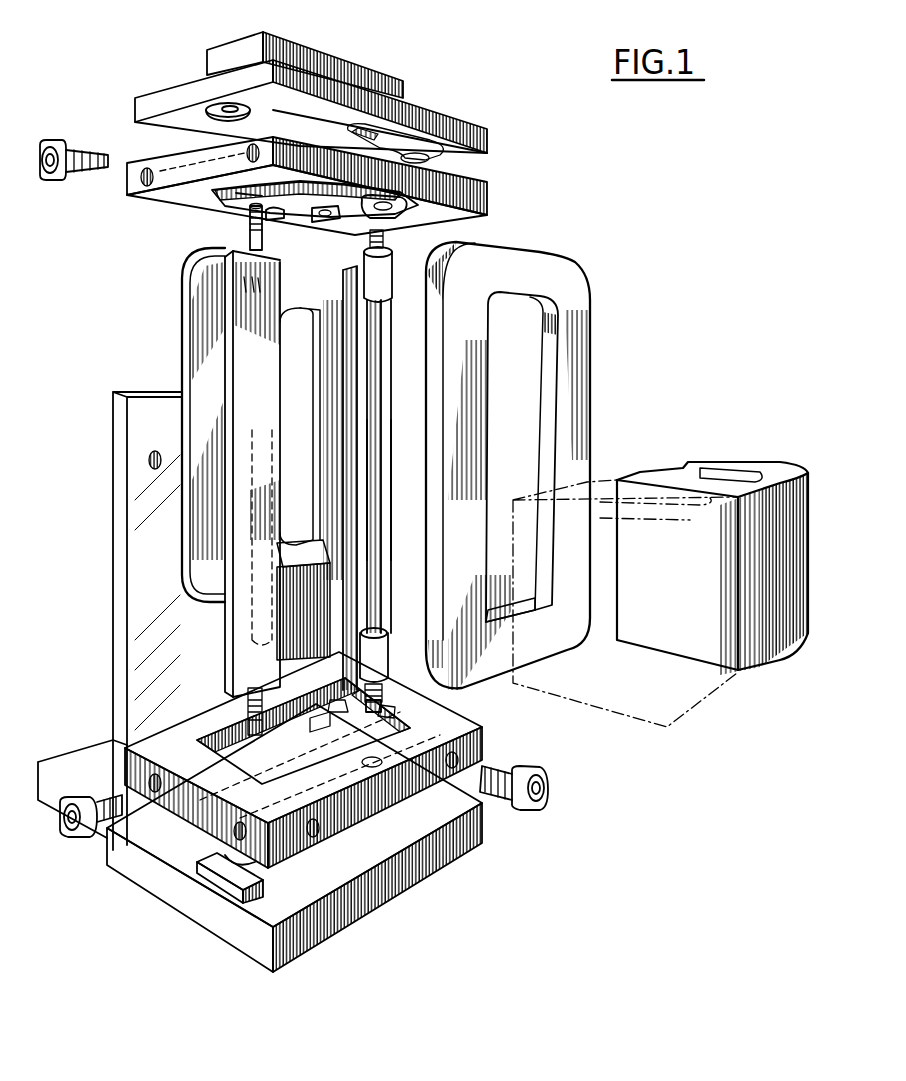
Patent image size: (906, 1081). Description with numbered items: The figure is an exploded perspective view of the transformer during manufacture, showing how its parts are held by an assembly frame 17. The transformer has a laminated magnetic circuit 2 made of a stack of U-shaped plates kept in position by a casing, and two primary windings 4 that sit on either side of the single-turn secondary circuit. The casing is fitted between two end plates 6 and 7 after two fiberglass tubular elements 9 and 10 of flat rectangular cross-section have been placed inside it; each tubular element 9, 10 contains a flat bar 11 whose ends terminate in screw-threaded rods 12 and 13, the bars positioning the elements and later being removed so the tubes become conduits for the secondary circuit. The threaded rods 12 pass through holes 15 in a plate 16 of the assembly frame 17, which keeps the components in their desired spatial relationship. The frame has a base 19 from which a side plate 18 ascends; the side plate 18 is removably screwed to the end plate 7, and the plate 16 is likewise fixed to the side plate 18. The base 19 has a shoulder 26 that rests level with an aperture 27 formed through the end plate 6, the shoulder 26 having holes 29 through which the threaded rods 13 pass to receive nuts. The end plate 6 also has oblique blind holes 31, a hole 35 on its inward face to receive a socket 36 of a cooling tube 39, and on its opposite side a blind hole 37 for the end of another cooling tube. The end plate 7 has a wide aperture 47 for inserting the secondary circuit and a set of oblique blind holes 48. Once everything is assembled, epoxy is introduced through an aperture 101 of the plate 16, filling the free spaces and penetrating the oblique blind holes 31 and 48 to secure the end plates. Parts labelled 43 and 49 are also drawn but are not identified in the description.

The laminated magnetic circuit 2 is at (773, 640).
The primary windings 4 is at (205, 350).
The end plate 6 is at (303, 760).
The end plate 7 is at (455, 216).
The tubular element 9 is at (263, 398).
The tubular element 10 is at (388, 374).
The flat bar 11 is at (380, 274).
The screw-threaded rod 12 is at (245, 222).
The screw-threaded rod 13 is at (363, 680).
The holes 15 is at (222, 108).
The plate 16 is at (339, 104).
The assembly frame 17 is at (110, 621).
The side plate 18 is at (127, 596).
The base 19 is at (400, 875).
The shoulder 26 is at (263, 900).
The aperture 27 is at (398, 727).
The holes 29 is at (230, 857).
The oblique blind holes 31 is at (323, 715).
The hole 35 is at (387, 212).
The socket 36 is at (392, 296).
The blind hole 37 is at (258, 695).
The cooling tube 39 is at (385, 440).
The spring 43 is at (282, 215).
The wide aperture 47 is at (240, 197).
The oblique blind holes 48 is at (320, 220).
The block 49 is at (332, 63).
The aperture 101 is at (448, 148).